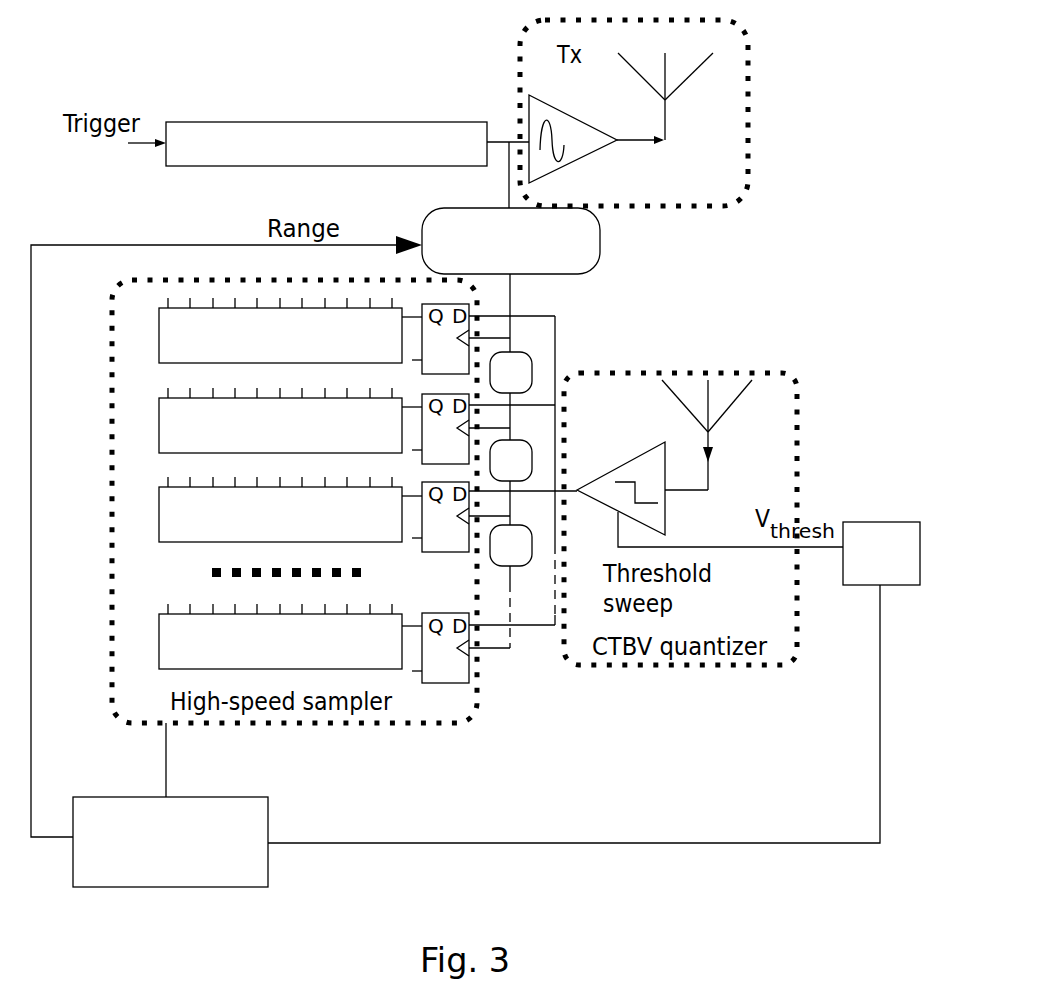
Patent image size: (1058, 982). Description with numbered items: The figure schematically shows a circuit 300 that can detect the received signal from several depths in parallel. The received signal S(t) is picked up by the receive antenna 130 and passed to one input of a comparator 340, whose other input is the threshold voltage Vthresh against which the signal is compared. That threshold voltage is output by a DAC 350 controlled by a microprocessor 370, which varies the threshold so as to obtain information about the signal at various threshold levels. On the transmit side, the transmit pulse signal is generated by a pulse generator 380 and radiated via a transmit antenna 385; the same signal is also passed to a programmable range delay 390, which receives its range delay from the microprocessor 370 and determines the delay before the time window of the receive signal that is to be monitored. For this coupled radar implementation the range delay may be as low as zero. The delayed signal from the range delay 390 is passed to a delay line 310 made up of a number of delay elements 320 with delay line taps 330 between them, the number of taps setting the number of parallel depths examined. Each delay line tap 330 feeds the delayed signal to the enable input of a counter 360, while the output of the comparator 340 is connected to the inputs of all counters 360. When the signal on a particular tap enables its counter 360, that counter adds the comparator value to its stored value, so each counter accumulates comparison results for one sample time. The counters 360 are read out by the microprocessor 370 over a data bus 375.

The receive antenna 130 is at (727, 383).
The circuit 300 is at (868, 171).
The delay line 310 is at (608, 319).
The delay element 320 is at (532, 365).
The delay line tap 330 is at (490, 337).
The comparator 340 is at (660, 512).
The DAC 350 is at (881, 553).
The counter 360 is at (280, 483).
The microprocessor 370 is at (170, 842).
The data bus 375 is at (166, 767).
The pulse generator 380 is at (340, 120).
The transmit antenna 385 is at (683, 58).
The programmable range delay 390 is at (600, 235).